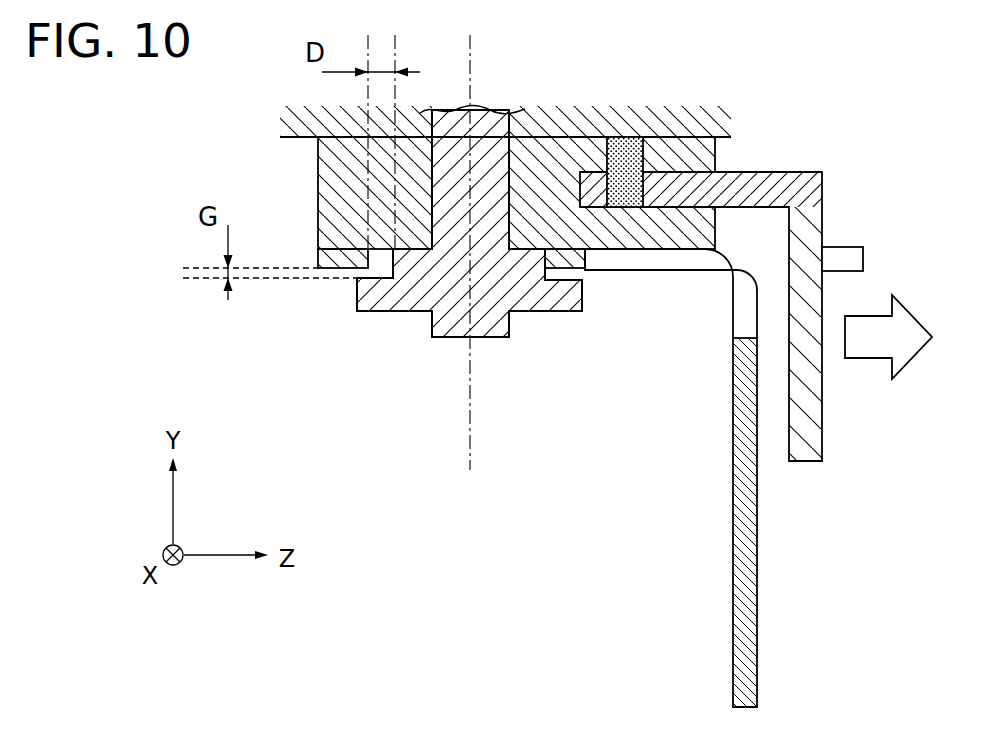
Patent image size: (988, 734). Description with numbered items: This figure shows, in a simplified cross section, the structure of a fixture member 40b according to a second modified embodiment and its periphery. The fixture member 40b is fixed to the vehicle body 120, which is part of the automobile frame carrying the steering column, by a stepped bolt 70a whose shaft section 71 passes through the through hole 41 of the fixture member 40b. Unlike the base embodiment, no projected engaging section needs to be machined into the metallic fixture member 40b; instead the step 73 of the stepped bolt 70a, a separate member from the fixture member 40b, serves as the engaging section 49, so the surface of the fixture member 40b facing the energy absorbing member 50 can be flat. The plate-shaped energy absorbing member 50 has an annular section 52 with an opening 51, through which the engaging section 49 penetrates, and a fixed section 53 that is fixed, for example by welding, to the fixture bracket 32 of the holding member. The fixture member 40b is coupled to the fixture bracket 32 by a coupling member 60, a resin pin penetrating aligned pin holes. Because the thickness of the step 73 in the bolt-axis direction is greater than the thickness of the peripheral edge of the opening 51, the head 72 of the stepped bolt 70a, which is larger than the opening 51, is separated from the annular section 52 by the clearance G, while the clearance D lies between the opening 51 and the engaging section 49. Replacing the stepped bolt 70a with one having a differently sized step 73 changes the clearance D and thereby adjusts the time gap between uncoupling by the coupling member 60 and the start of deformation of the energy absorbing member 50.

The vehicle body 120 is at (699, 129).
The fixture member 40b is at (496, 202).
The annular section 52 is at (317, 257).
The fixture bracket 32 is at (762, 281).
The fixed section 53 is at (838, 247).
The coupling member 60 is at (630, 148).
The stepped bolt 70a is at (466, 236).
The shaft section 71 is at (488, 147).
The through hole 41 is at (452, 152).
The opening 51 is at (367, 250).
The engaging section 49 is at (405, 256).
The step 73 is at (487, 339).
The head 72 is at (492, 338).
The energy absorbing member 50 is at (774, 543).